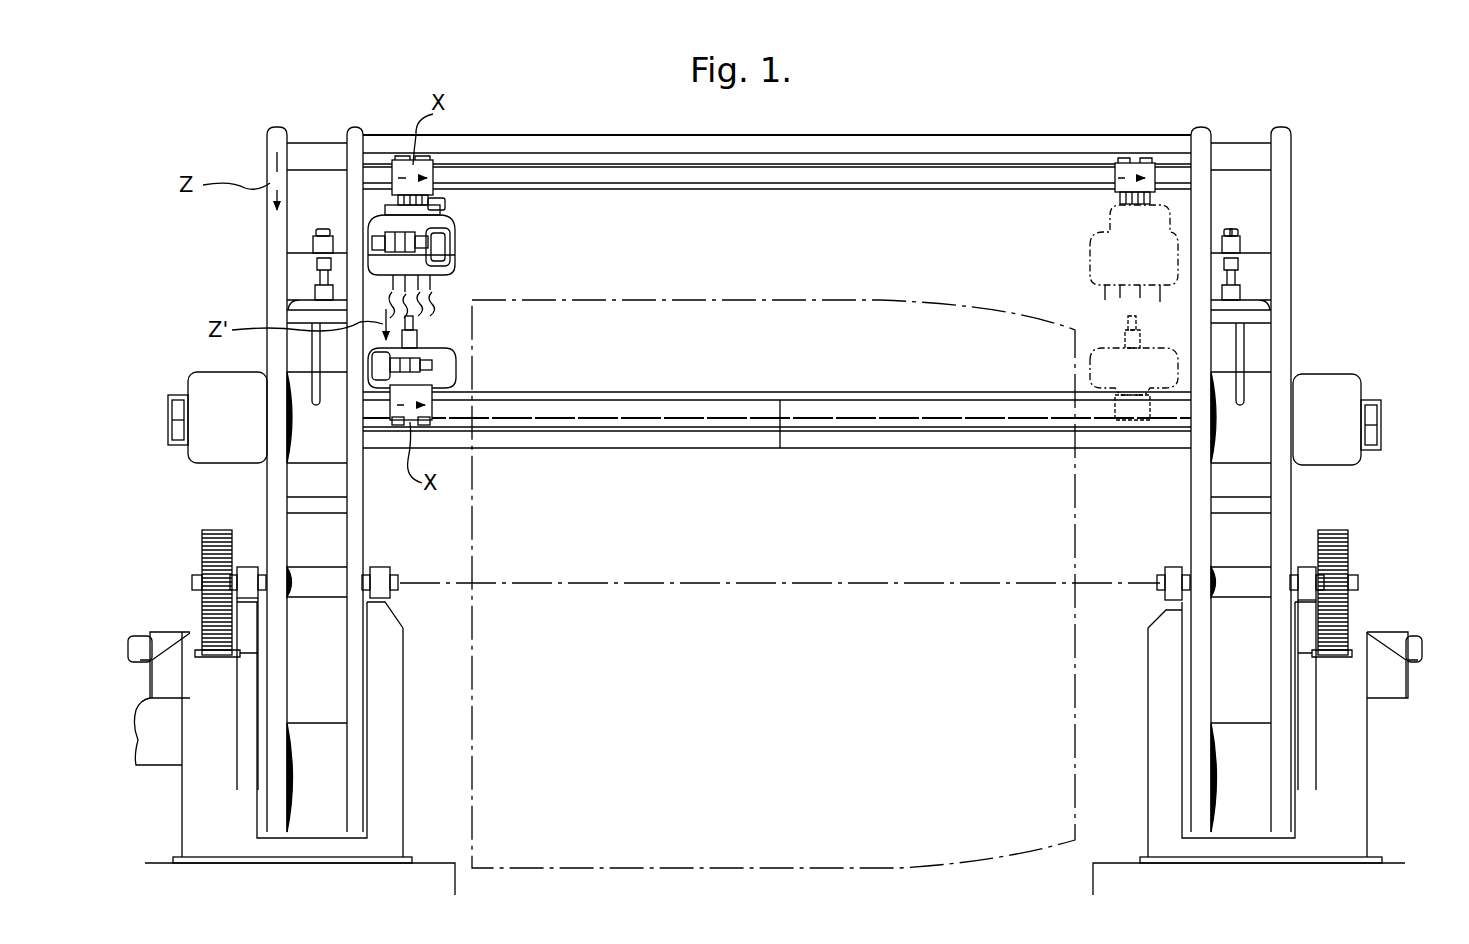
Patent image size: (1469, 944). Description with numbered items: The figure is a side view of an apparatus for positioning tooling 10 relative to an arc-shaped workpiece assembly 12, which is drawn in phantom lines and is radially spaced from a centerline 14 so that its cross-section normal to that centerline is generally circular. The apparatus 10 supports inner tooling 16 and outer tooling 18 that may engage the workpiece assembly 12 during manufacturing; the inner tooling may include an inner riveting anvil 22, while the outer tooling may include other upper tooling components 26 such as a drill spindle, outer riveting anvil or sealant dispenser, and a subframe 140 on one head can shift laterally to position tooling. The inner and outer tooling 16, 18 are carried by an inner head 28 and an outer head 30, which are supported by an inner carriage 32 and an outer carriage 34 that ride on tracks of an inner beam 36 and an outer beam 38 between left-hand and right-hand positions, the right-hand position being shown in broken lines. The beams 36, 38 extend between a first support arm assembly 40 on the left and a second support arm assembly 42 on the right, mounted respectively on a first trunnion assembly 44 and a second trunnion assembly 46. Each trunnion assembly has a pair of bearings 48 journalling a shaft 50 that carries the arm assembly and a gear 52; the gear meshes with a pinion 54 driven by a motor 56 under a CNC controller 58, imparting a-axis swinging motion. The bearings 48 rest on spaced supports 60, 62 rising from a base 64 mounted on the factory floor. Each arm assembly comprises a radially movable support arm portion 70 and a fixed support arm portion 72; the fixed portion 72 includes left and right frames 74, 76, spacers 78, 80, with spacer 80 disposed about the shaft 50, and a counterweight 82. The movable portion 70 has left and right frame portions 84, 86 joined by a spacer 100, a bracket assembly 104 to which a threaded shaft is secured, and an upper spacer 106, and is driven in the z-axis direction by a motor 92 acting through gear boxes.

The apparatus for positioning tooling 10 is at (1080, 114).
The arc-shaped workpiece assembly 12 is at (665, 282).
The centerline 14 is at (737, 581).
The inner tooling 16 is at (470, 335).
The outer tooling 18 is at (447, 285).
The inner riveting anvil 22 is at (416, 331).
The other upper tooling components 26 is at (412, 308).
The inner head 28 is at (458, 368).
The outer head 30 is at (463, 245).
The inner carriage 32 is at (443, 408).
The outer carriage 34 is at (447, 172).
The inner beam 36 is at (898, 391).
The outer beam 38 is at (937, 135).
The first support arm assembly 40 is at (367, 525).
The second support arm assembly 42 is at (1296, 483).
The first trunnion assembly 44 is at (413, 652).
The second trunnion assembly 46 is at (1145, 668).
The bearings 48 is at (243, 566).
The shaft 50 is at (192, 580).
The gear 52 is at (208, 529).
The pinion 54 is at (222, 658).
The motor 56 is at (142, 636).
The CNC controller 58 is at (150, 770).
The support 60 is at (247, 668).
The support 62 is at (395, 688).
The base 64 is at (256, 848).
The movable support arm portion 70 is at (265, 150).
The fixed support arm portion 72 is at (258, 483).
The left frame 74 is at (282, 527).
The right frame 76 is at (346, 548).
The spacer 78 is at (322, 497).
The spacer 80 is at (300, 591).
The counterweight 82 is at (322, 730).
The left frame portion 84 is at (275, 220).
The right frame portion 86 is at (347, 187).
The motor 92 is at (1233, 233).
The spacer 100 is at (297, 303).
The bracket assembly 104 is at (302, 247).
The upper spacer 106 is at (320, 143).
The subframe 140 is at (457, 262).